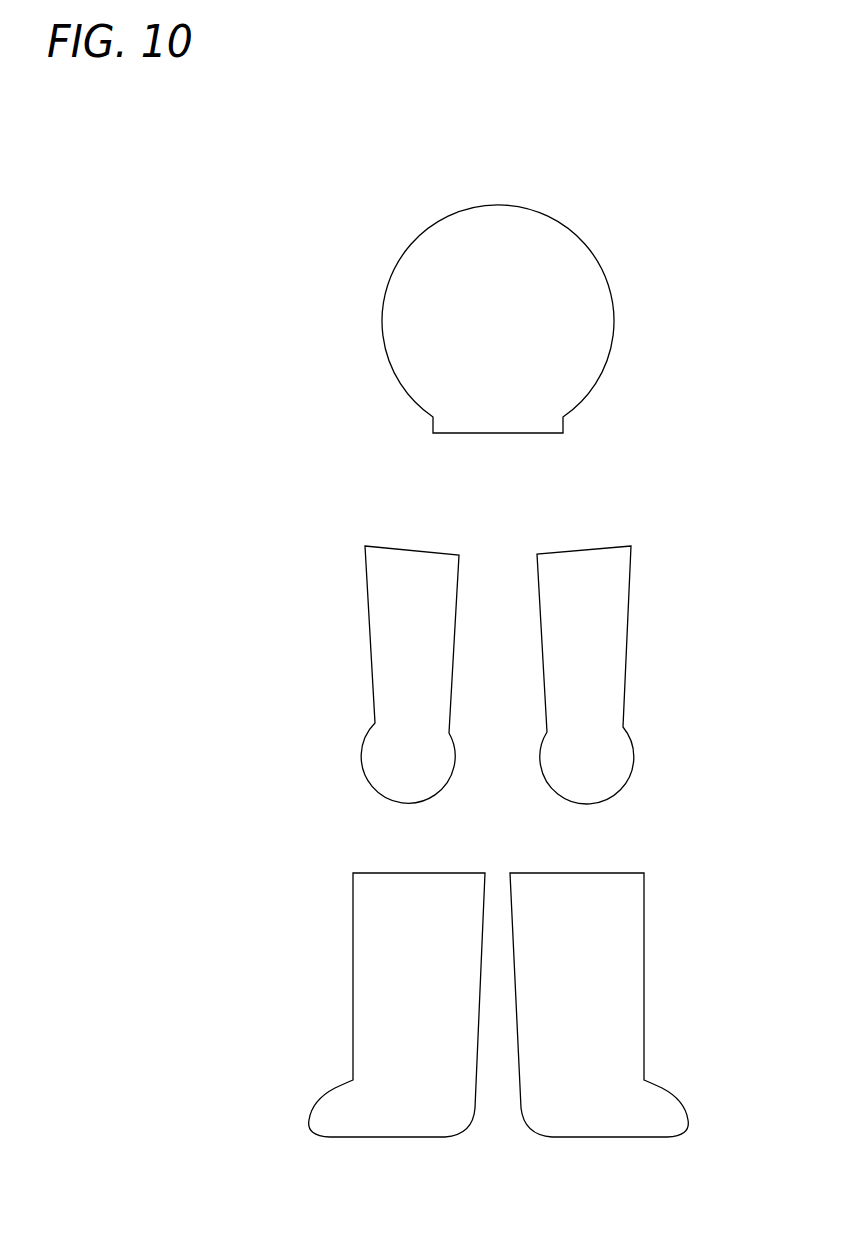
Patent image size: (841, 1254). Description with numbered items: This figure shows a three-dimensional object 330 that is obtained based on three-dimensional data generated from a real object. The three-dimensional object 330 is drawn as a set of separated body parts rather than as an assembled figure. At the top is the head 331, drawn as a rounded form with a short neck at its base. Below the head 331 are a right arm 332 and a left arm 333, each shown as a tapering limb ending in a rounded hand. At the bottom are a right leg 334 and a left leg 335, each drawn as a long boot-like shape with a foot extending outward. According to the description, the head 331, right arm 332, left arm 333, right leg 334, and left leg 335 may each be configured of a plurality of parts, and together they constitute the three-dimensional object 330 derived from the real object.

The three-dimensional object 330 is at (622, 204).
The head 331 is at (583, 333).
The right arm 332 is at (392, 625).
The left arm 333 is at (605, 625).
The right leg 334 is at (390, 995).
The left leg 335 is at (607, 995).